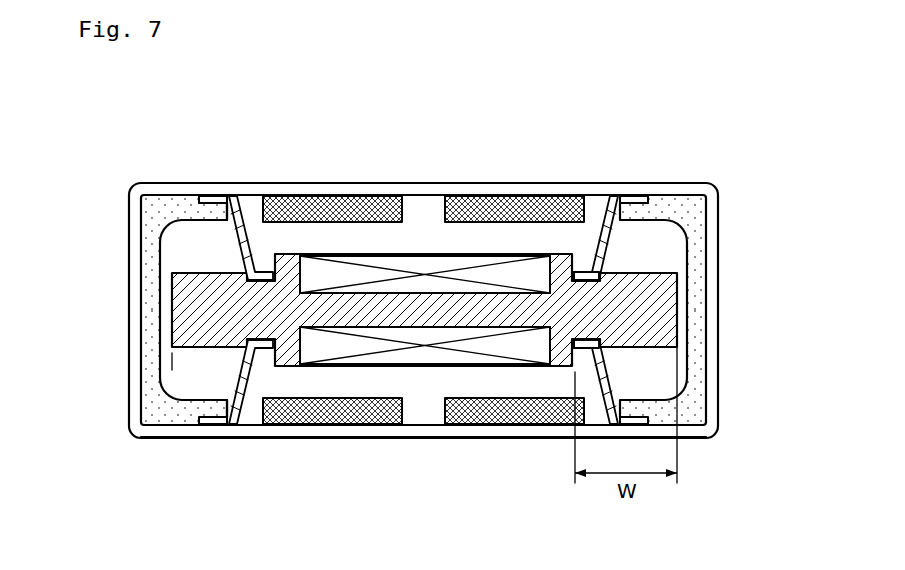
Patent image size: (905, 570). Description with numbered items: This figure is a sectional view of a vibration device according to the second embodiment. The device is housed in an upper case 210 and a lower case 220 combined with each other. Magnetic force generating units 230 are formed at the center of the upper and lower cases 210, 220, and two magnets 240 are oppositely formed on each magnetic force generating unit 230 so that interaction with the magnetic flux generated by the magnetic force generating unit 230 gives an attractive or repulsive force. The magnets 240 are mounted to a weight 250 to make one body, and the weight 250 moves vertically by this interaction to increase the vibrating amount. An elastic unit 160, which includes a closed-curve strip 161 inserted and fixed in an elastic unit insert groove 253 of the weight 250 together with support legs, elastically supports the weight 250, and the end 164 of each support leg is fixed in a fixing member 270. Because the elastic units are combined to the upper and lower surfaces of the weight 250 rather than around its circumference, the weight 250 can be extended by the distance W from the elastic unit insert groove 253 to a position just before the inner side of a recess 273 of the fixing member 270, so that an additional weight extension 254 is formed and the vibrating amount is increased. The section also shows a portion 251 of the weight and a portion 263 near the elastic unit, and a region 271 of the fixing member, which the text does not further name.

The elastic unit 160 is at (250, 214).
The strip 161 is at (580, 275).
The end of support leg 164 is at (632, 198).
The upper case 210 is at (133, 398).
The lower case 220 is at (697, 427).
The magnetic force generating unit 230 is at (494, 208).
The magnet 240 is at (426, 270).
The weight 250 is at (288, 270).
The coil winding 251 is at (533, 343).
The elastic unit insert groove 253 is at (601, 266).
The weight extension 254 is at (667, 302).
The second terminal plate 263 is at (603, 222).
The fixing member 270 is at (160, 214).
The resin upper portion 271 is at (206, 211).
The recess 273 is at (172, 362).